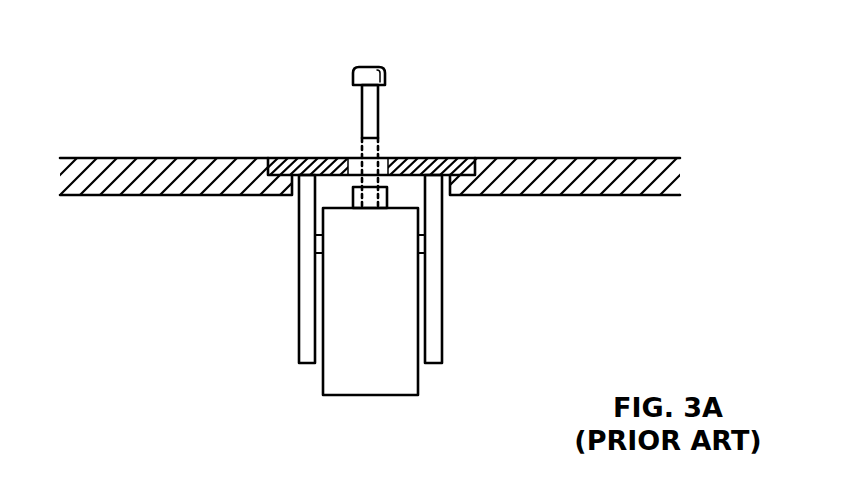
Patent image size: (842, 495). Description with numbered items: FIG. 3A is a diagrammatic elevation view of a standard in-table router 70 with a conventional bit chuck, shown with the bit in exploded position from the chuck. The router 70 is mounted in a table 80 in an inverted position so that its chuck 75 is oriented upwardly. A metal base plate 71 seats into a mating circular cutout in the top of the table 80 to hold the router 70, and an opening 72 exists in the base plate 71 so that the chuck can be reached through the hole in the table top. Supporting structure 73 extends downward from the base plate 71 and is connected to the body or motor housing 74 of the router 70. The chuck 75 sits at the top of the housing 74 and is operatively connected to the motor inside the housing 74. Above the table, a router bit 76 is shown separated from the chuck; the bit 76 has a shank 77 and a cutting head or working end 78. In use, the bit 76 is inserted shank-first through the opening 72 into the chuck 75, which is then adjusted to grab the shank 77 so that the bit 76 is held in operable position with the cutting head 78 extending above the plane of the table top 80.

The router 70 is at (363, 294).
The base plate 71 is at (461, 166).
The opening 72 is at (384, 157).
The supporting structure 73 is at (310, 240).
The motor housing 74 is at (358, 345).
The chuck 75 is at (353, 200).
The router bit 76 is at (358, 114).
The shank 77 is at (370, 105).
The cutting head 78 is at (353, 77).
The table 80 is at (597, 160).